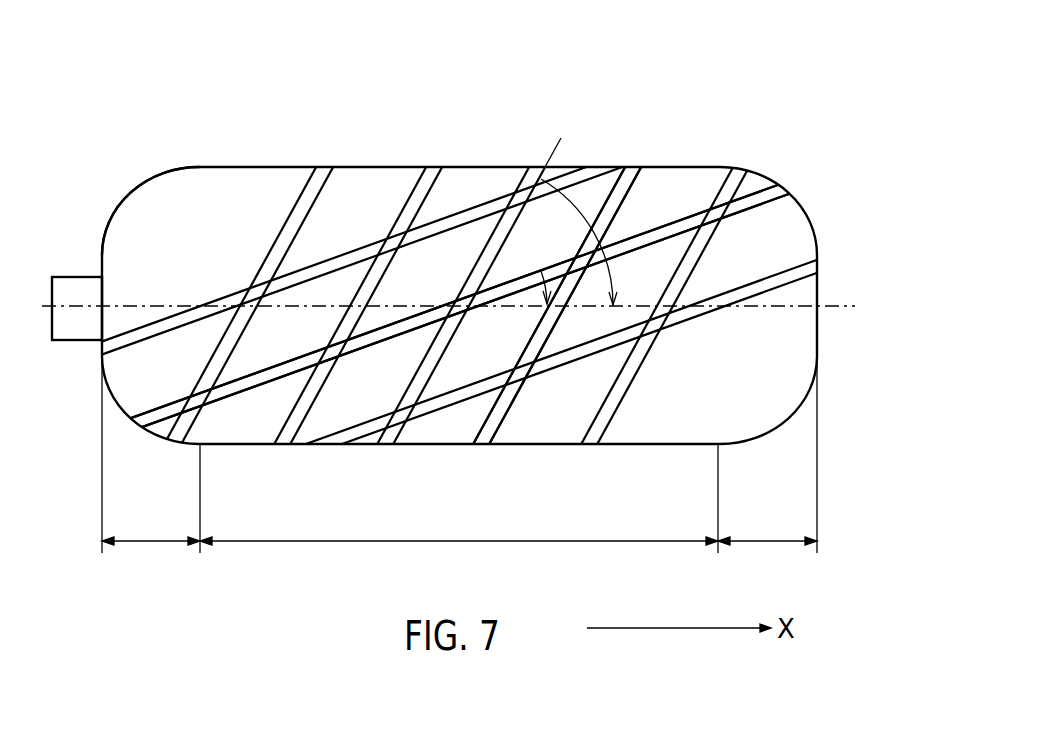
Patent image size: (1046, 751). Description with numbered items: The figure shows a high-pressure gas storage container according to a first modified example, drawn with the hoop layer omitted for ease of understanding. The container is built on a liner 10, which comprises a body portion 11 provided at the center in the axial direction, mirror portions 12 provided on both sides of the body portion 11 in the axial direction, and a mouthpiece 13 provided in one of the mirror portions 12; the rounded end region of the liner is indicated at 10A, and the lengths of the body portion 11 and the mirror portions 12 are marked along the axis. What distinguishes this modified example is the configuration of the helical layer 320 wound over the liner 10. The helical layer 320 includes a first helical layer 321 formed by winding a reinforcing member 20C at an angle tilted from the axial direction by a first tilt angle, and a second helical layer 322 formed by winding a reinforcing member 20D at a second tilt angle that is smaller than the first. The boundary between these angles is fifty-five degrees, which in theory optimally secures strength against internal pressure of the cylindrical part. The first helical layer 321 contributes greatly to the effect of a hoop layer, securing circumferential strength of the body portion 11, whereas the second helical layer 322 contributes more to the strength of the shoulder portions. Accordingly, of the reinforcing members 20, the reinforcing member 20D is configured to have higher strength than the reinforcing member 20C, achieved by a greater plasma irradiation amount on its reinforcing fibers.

The liner 10 is at (298, 177).
The dome portion of tank 10A is at (208, 167).
The mouthpiece 13 is at (67, 276).
The helical layer 320 is at (460, 295).
The first helical layer 321 is at (412, 193).
The second helical layer 322 is at (397, 100).
The reinforcing member 20 is at (460, 254).
The reinforcing member 20C is at (635, 185).
The reinforcing member 20D is at (615, 100).
The body portion 11 is at (459, 527).
The mirror portion 12 is at (459, 527).